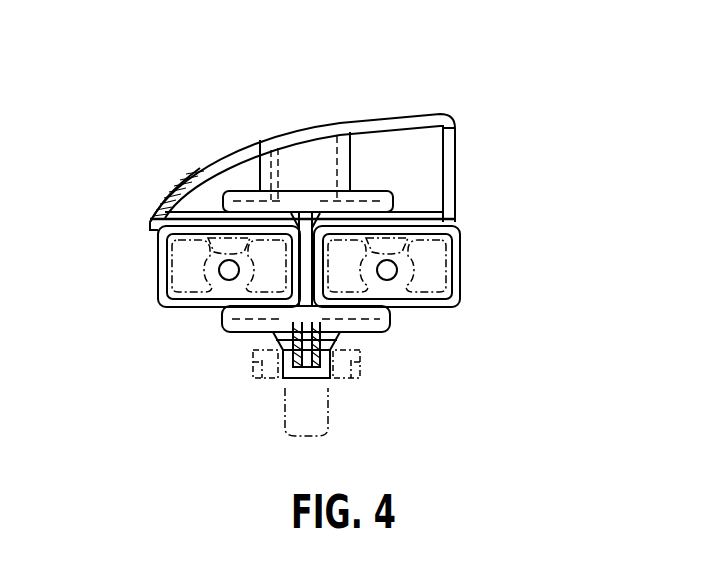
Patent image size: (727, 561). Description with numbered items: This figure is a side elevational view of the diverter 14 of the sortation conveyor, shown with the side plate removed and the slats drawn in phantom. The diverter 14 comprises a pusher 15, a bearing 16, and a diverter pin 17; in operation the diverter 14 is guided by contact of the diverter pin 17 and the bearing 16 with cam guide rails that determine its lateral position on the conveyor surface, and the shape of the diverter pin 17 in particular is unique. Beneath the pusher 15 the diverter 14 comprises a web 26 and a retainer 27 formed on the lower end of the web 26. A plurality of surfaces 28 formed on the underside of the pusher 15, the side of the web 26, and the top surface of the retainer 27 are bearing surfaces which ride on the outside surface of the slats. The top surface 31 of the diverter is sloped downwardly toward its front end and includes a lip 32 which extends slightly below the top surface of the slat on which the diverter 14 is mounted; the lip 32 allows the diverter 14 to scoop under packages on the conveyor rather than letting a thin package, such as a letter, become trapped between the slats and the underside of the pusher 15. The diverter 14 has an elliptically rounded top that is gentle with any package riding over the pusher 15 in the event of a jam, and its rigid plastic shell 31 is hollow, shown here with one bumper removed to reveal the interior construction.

The diverter 14 is at (138, 172).
The pusher 15 is at (388, 142).
The bearing 16 is at (353, 372).
The diverter pin 17 is at (308, 417).
The web 26 is at (305, 267).
The retainer 27 is at (238, 318).
The bearing surfaces 28 is at (425, 223).
The top surface 31 is at (222, 152).
The lip 32 is at (157, 230).